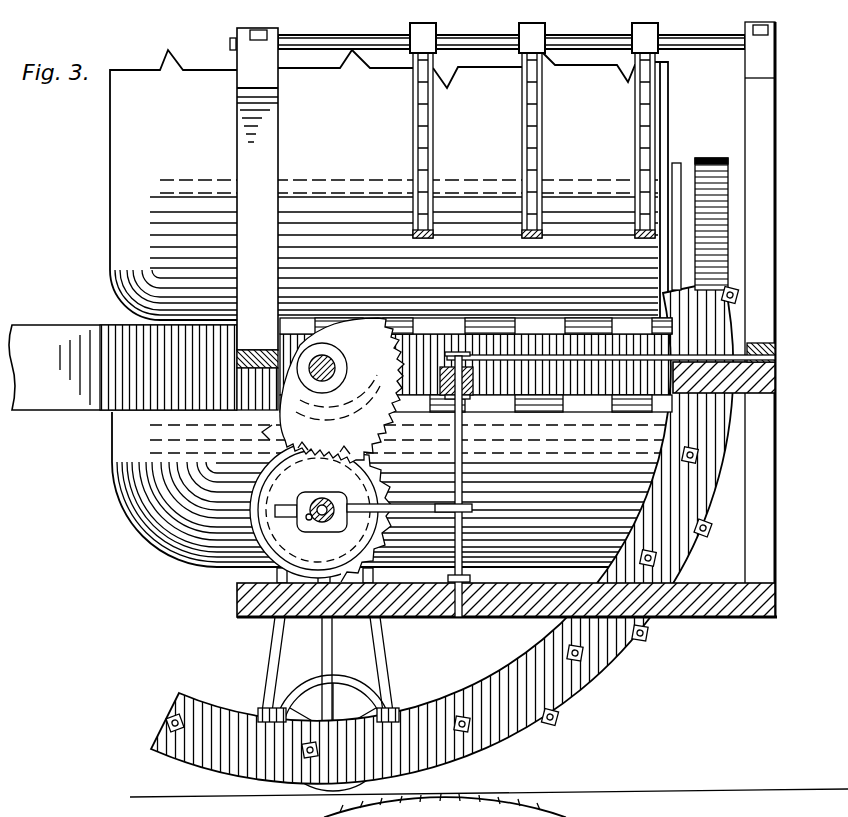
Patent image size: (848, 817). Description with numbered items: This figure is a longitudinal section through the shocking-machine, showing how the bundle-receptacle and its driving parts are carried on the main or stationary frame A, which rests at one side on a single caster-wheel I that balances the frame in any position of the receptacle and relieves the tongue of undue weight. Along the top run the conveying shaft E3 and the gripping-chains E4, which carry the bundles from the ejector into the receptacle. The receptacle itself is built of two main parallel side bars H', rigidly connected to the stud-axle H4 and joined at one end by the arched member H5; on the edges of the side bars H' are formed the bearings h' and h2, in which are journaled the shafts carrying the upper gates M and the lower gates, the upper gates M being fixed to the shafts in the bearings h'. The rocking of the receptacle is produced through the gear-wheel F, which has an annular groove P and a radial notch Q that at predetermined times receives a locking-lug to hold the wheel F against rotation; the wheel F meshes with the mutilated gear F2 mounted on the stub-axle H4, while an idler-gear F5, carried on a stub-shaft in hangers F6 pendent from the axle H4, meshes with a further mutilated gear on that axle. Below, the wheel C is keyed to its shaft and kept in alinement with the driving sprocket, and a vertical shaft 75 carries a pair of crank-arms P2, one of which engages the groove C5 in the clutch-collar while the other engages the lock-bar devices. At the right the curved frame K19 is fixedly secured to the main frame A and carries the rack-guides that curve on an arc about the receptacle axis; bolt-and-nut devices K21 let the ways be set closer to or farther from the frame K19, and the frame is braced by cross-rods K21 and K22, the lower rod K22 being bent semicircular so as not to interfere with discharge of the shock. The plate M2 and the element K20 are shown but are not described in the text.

The shaft E3 is at (581, 44).
The gripping-chains E4 is at (543, 112).
The upper gates M is at (395, 308).
The tank plate M2 is at (681, 165).
The arched member H5 is at (713, 160).
The bearings h' is at (476, 290).
The bearings h2 is at (657, 408).
The crank-arms P2 is at (543, 356).
The main frame A is at (253, 350).
The side bars H' is at (340, 367).
The bolt-and-nut devices K21 is at (740, 294).
The frame K19 is at (712, 477).
The bolt K20 is at (590, 652).
The cross-rod K22 is at (556, 719).
The stub-axle H4 is at (322, 386).
The gear-wheel F is at (376, 480).
The idler-gear F5 is at (346, 451).
The hangers F6 is at (300, 441).
The mutilated gear F2 is at (262, 432).
The annular groove P is at (307, 492).
The radial notch Q is at (283, 499).
The wheel C is at (312, 522).
The groove C5 is at (308, 518).
The vertical shaft 75 is at (463, 471).
The caster-wheel I is at (340, 685).